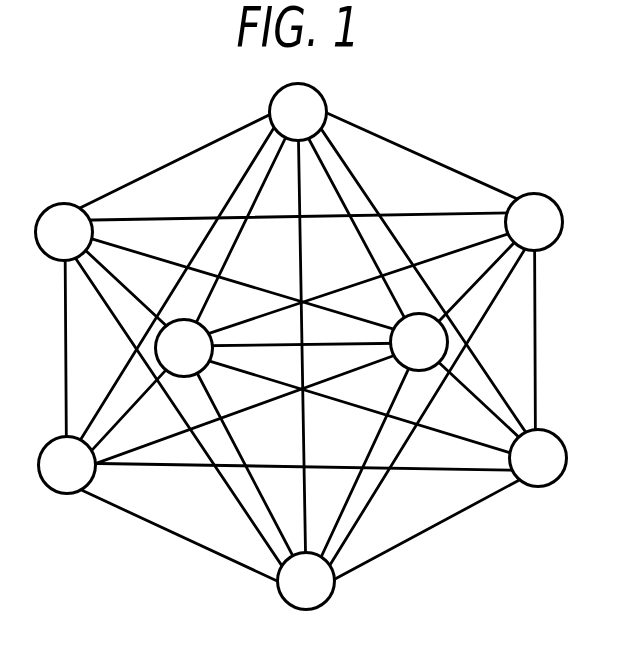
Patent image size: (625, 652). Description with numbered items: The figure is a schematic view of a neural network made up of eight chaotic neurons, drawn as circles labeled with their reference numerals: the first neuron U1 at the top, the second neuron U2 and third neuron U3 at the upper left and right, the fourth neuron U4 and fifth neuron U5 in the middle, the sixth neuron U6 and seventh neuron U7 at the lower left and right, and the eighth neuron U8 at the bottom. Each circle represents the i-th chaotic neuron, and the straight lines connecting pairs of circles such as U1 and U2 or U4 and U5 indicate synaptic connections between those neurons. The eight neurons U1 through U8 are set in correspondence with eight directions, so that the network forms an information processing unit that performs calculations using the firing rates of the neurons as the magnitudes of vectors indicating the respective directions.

The chaotic neuron U1 is at (298, 112).
The chaotic neuron U2 is at (64, 232).
The chaotic neuron U3 is at (534, 222).
The chaotic neuron U4 is at (184, 348).
The chaotic neuron U5 is at (419, 342).
The chaotic neuron U6 is at (67, 465).
The chaotic neuron U7 is at (538, 458).
The chaotic neuron U8 is at (306, 581).